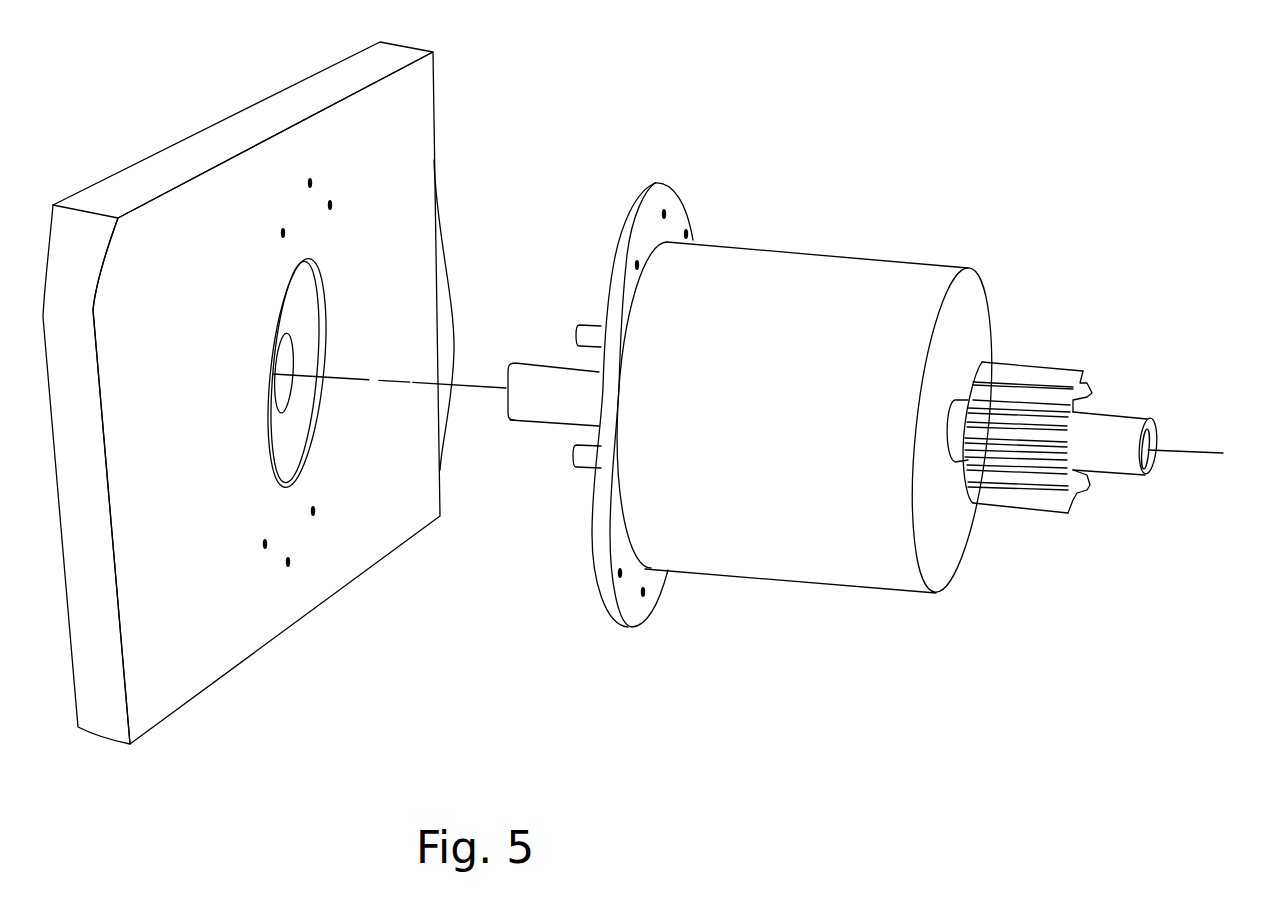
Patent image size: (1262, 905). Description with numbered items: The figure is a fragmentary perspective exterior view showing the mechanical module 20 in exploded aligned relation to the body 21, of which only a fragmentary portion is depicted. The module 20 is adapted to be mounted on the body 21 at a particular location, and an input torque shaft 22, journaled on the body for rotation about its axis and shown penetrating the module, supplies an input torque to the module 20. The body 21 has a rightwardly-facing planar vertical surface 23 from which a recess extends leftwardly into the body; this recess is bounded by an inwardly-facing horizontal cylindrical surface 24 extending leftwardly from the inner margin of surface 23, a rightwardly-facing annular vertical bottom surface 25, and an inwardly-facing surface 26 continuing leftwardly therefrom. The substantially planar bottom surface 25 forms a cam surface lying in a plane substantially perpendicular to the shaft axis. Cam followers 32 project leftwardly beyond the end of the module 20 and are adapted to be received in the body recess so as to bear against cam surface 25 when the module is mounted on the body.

The mechanical module 20 is at (858, 153).
The body 21 is at (260, 117).
The input torque shaft 22 is at (1134, 413).
The planar vertical surface 23 is at (404, 133).
The horizontal cylindrical surface 24 is at (308, 283).
The annular vertical bottom surface 25 is at (286, 461).
The inwardly-facing surface 26 is at (290, 381).
The cam followers 32 is at (585, 318).